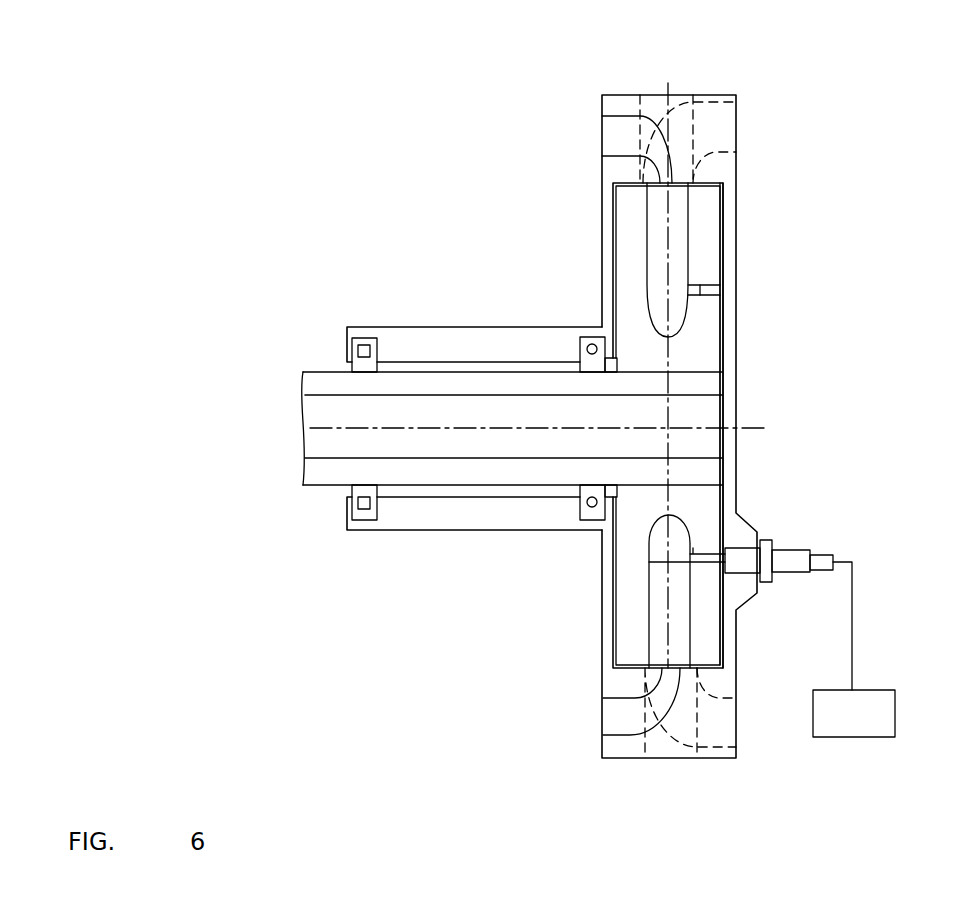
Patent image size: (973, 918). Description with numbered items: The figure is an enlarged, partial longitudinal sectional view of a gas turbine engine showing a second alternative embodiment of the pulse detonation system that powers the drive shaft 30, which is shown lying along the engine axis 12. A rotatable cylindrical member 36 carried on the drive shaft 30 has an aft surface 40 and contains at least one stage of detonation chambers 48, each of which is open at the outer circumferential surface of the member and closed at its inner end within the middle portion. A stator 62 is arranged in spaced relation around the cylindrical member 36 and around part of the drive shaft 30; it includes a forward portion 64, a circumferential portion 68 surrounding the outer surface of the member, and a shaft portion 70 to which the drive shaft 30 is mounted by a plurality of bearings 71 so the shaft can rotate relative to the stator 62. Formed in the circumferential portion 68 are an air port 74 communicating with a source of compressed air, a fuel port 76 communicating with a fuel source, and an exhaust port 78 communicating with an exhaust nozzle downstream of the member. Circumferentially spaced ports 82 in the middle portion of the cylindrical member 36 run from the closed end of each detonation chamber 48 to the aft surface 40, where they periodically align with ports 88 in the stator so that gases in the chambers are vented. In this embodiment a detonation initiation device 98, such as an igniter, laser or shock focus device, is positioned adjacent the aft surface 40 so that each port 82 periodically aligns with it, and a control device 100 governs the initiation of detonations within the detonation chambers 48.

The axis of rotation 12 is at (330, 428).
The drive shaft 30 is at (322, 385).
The rotatable cylindrical member 36 is at (726, 250).
The aft surface 40 is at (724, 470).
The detonation chamber 48 is at (694, 234).
The stator 62 is at (741, 164).
The forward portion 64 is at (606, 248).
The circumferential portion 68 is at (613, 103).
The shaft portion 70 is at (478, 520).
The bearings 71 is at (363, 340).
The air port 74 is at (645, 97).
The fuel port 76 is at (615, 157).
The exhaust port 78 is at (718, 152).
The ports 82 is at (703, 294).
The ports 88 is at (700, 287).
The device for initiating a detonation 98 is at (790, 552).
The control device 100 is at (875, 690).